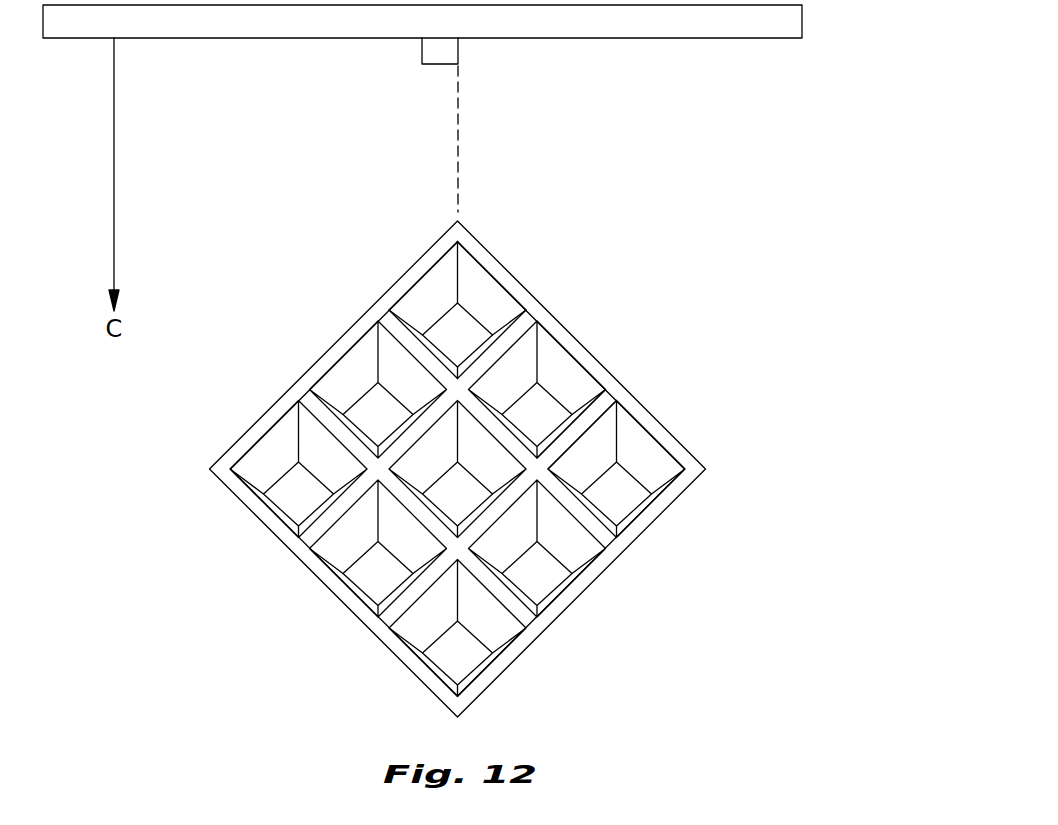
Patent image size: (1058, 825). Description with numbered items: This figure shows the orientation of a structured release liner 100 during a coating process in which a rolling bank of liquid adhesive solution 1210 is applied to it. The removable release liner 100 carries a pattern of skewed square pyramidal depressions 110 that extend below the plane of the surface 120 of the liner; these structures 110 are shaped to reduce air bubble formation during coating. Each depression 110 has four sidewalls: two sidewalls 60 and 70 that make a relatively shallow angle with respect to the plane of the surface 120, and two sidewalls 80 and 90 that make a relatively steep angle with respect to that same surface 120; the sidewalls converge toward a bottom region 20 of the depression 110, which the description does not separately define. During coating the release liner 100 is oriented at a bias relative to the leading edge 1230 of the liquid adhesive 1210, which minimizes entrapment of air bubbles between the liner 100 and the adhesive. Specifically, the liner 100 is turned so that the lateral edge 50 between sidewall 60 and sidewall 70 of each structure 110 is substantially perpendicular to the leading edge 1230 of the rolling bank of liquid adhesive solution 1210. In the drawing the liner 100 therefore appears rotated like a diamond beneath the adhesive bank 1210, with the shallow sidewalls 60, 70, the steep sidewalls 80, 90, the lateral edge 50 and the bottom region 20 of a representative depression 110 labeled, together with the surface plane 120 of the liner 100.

The liquid adhesive 1210 is at (790, 25).
The leading edge 1230 is at (626, 39).
The release liner 100 is at (675, 488).
The pyramidal depressions 110 is at (638, 447).
The plane of the release liner 120 is at (607, 397).
The bottom surface 20 is at (462, 332).
The lateral edge 50 is at (480, 285).
The sidewall 60 is at (458, 270).
The sidewall 70 is at (435, 282).
The sidewall 80 is at (423, 333).
The sidewall 90 is at (485, 346).